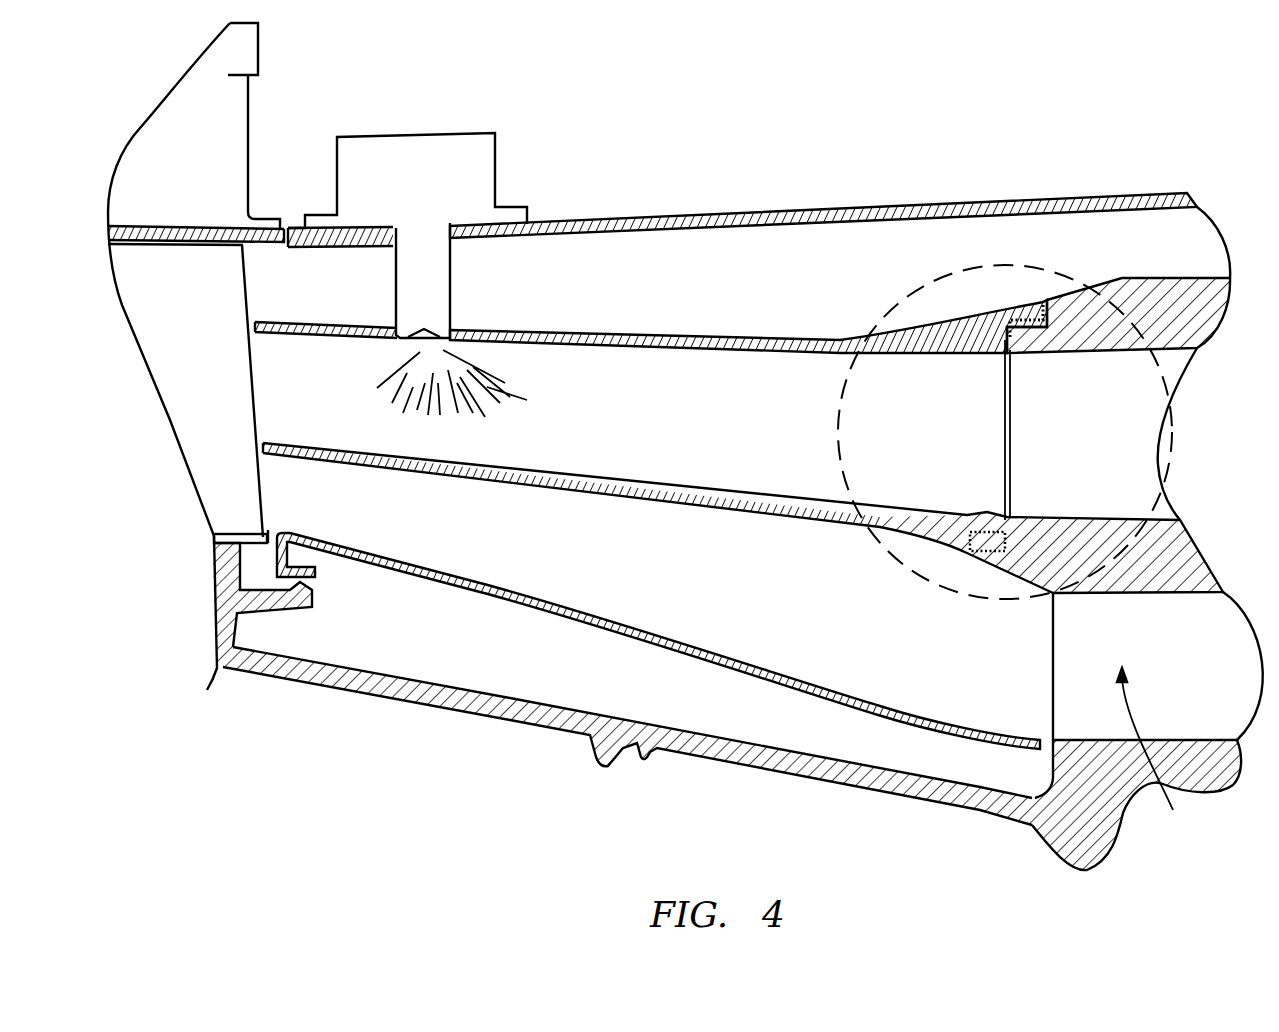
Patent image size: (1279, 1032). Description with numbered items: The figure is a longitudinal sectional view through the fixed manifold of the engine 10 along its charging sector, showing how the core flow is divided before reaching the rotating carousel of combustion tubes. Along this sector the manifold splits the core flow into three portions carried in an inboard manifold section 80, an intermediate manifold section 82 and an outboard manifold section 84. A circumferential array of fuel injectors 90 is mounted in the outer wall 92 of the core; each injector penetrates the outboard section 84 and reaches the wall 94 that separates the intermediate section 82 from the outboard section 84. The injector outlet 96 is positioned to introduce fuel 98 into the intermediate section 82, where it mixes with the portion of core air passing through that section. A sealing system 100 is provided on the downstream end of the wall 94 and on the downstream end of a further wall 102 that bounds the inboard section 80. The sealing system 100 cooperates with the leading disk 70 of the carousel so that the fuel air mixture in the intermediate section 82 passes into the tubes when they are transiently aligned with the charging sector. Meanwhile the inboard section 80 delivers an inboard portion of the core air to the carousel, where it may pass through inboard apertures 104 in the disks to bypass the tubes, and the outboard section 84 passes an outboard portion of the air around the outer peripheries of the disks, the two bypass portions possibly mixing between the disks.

The augmentor exit region 10 is at (983, 265).
The leading disk 70 is at (1122, 278).
The inboard manifold section 80 is at (736, 586).
The intermediate manifold section 82 is at (666, 405).
The outboard manifold section 84 is at (786, 295).
The fuel injector 90 is at (473, 178).
The outer wall 92 is at (620, 222).
The wall 94 is at (566, 330).
The injector outlet 96 is at (449, 340).
The fuel 98 is at (497, 403).
The sealing system 100 is at (988, 557).
The wall 102 is at (600, 487).
The inboard apertures 104 is at (1172, 753).